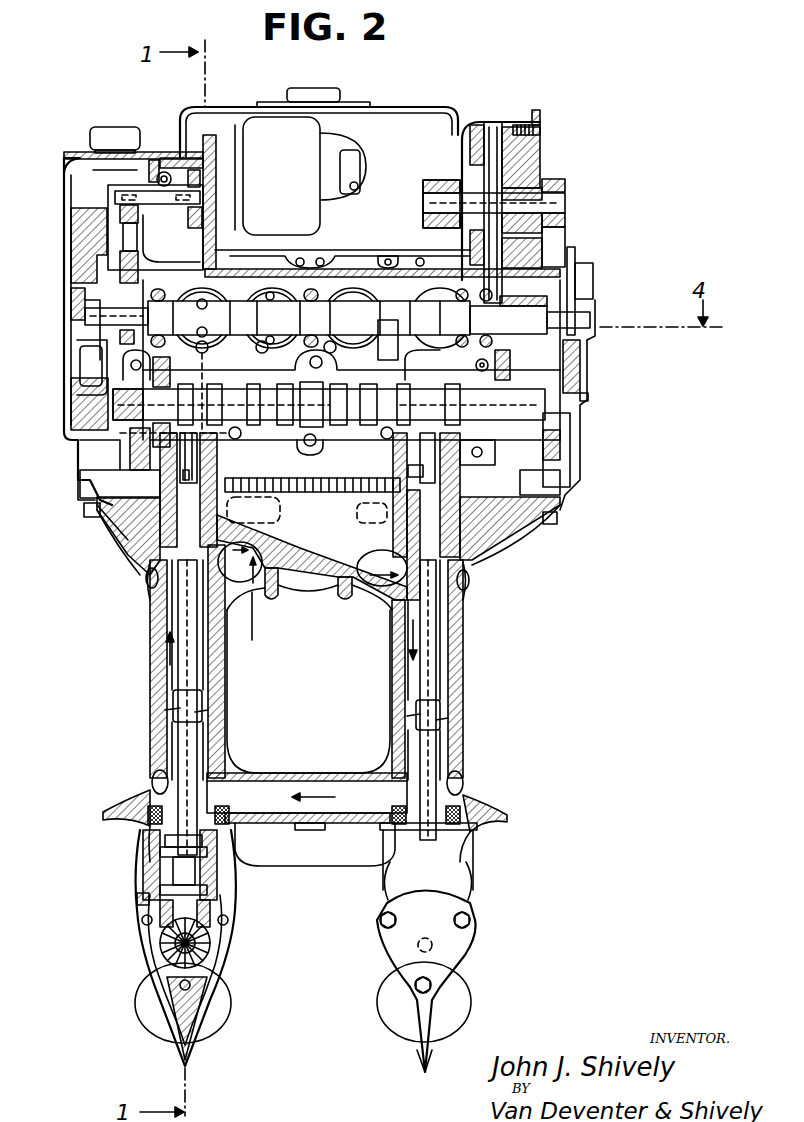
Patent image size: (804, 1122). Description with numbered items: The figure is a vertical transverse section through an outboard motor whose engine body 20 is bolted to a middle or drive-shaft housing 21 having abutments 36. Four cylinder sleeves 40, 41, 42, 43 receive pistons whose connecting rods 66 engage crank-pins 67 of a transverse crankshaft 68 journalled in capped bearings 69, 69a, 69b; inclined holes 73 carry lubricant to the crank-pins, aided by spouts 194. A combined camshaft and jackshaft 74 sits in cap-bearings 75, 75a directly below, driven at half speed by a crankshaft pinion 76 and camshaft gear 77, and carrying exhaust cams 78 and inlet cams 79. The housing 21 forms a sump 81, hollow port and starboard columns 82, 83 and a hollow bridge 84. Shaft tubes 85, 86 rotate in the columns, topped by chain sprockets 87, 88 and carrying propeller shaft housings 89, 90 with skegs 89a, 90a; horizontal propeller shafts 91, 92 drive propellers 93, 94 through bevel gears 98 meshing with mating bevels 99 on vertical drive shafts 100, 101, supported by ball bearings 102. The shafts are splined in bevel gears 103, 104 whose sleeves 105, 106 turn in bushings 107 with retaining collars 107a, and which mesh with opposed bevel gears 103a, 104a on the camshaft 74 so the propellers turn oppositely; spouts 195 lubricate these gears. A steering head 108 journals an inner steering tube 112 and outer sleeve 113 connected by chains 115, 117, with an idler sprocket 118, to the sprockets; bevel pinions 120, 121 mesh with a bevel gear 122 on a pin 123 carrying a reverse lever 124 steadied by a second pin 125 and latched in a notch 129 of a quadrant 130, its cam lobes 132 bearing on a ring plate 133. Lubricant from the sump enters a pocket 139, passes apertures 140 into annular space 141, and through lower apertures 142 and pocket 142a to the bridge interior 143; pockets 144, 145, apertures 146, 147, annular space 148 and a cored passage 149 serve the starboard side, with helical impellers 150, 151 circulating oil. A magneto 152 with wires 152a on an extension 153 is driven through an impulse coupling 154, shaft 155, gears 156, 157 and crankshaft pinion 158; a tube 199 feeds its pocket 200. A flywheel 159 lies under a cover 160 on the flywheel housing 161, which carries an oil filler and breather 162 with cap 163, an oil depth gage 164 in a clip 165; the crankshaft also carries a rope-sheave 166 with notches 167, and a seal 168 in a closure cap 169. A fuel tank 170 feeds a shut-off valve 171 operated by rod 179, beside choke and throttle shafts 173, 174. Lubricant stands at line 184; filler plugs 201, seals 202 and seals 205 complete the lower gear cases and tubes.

The engine body 20 is at (78, 470).
The middle or drive-shaft housing 21 is at (126, 556).
The abutments 36 is at (273, 592).
The cylinder sleeve 40 is at (186, 303).
The cylinder sleeve 41 is at (250, 303).
The cylinder sleeve 42 is at (341, 303).
The cylinder sleeve 43 is at (403, 303).
The connecting rods 66 is at (204, 302).
The crank-pins 67 is at (261, 353).
The crankshaft 68 is at (387, 346).
The capped bearing 69 is at (341, 367).
The capped bearing 69a is at (330, 353).
The capped bearing 69b is at (479, 367).
The inclined hole 73 is at (504, 365).
The combined camshaft and jackshaft 74 is at (82, 445).
The cap-bearing 75 is at (132, 440).
The cap-bearing 75a is at (300, 444).
The crankshaft pinion 76 is at (582, 370).
The camshaft gear 77 is at (561, 452).
The exhaust cams 78 is at (206, 385).
The inlet cams 79 is at (236, 385).
The sump 81 is at (365, 592).
The port column or drive shaft housing 82 is at (465, 638).
The starboard column or drive shaft housing 83 is at (150, 632).
The bridge 84 is at (316, 773).
The port shaft tube 85 is at (463, 673).
The starboard shaft tube 86 is at (168, 670).
The chain sprocket 87 is at (405, 470).
The chain sprocket 88 is at (222, 468).
The propeller shaft housing 89 is at (478, 935).
The skeg 89a is at (432, 1060).
The propeller shaft housing 90 is at (140, 925).
The skeg 90a is at (178, 1002).
The propeller shaft 91 is at (433, 947).
The propeller shaft 92 is at (212, 950).
The propeller 93 is at (465, 996).
The propeller 94 is at (228, 1003).
The bevel gears 98 is at (165, 952).
The mating bevels 99 is at (222, 916).
The vertical drive shaft 100 is at (437, 752).
The vertical drive shaft 101 is at (196, 750).
The ball bearings 102 is at (205, 880).
The bevel gear 103 is at (395, 452).
The bevel gear 103a is at (427, 365).
The bevel gear 104 is at (218, 445).
The bevel gear 104a is at (200, 354).
The lower sleeve 105 is at (488, 532).
The lower sleeve 106 is at (125, 530).
The bushings 107 is at (125, 512).
The retaining collars 107a is at (146, 580).
The steering head 108 is at (478, 125).
The inner steering tube or pivot 112 is at (538, 180).
The outer steering tube or sleeve 113 is at (545, 255).
The chain 115 is at (477, 452).
The chain 117 is at (318, 478).
The idler sprocket 118 is at (558, 492).
The bevel pinion 120 is at (527, 152).
The bevel pinion 121 is at (564, 232).
The bevel gear 122 is at (534, 190).
The pin 123 is at (564, 205).
The reverse lever 124 is at (356, 192).
The second pin 125 is at (356, 214).
The notch 129 is at (539, 112).
The quadrant 130 is at (541, 130).
The cam lobes 132 is at (577, 258).
The ring plate 133 is at (580, 276).
The pocket 139 is at (468, 578).
The apertures 140 is at (382, 568).
The annular space 141 is at (441, 620).
The lower apertures 142 is at (402, 786).
The lower pocket 142a is at (463, 786).
The hollow interior 143 is at (342, 824).
The upper pocket 144 is at (148, 592).
The lower pocket 145 is at (152, 782).
The apertures 146 is at (236, 562).
The apertures 147 is at (216, 783).
The annular space 148 is at (206, 660).
The cored passage 149 is at (252, 616).
The helical impeller 150 is at (416, 716).
The helical impeller 151 is at (203, 706).
The magneto 152 is at (322, 136).
The wires 152a is at (367, 163).
The upward extension 153 is at (165, 158).
The impulse coupling 154 is at (172, 216).
The shaft 155 is at (146, 244).
The gear 156 is at (115, 190).
The gear 157 is at (90, 240).
The crankshaft pinion 158 is at (78, 296).
The flywheel 159 is at (75, 400).
The cover 160 is at (80, 366).
The flywheel housing 161 is at (76, 158).
The combined oil filler and breather 162 is at (115, 198).
The cap 163 is at (118, 127).
The oil depth gage 164 is at (100, 357).
The clip 165 is at (93, 367).
The rope-sheave 166 is at (590, 356).
The notches 167 is at (590, 397).
The seal 168 is at (594, 305).
The closure cap 169 is at (572, 430).
The fuel tank 170 is at (436, 116).
The shut-off valve 171 is at (382, 263).
The choke control shaft 173 is at (298, 259).
The throttle control shaft 174 is at (322, 259).
The rod 179 is at (424, 264).
The dot and dash line 184 is at (82, 488).
The spouts 194 is at (273, 296).
The spouts 195 is at (234, 427).
The tube 199 is at (168, 174).
The pocket 200 is at (153, 160).
The filler plugs 201 is at (137, 899).
The seals 202 is at (204, 852).
The seals 205 is at (140, 822).